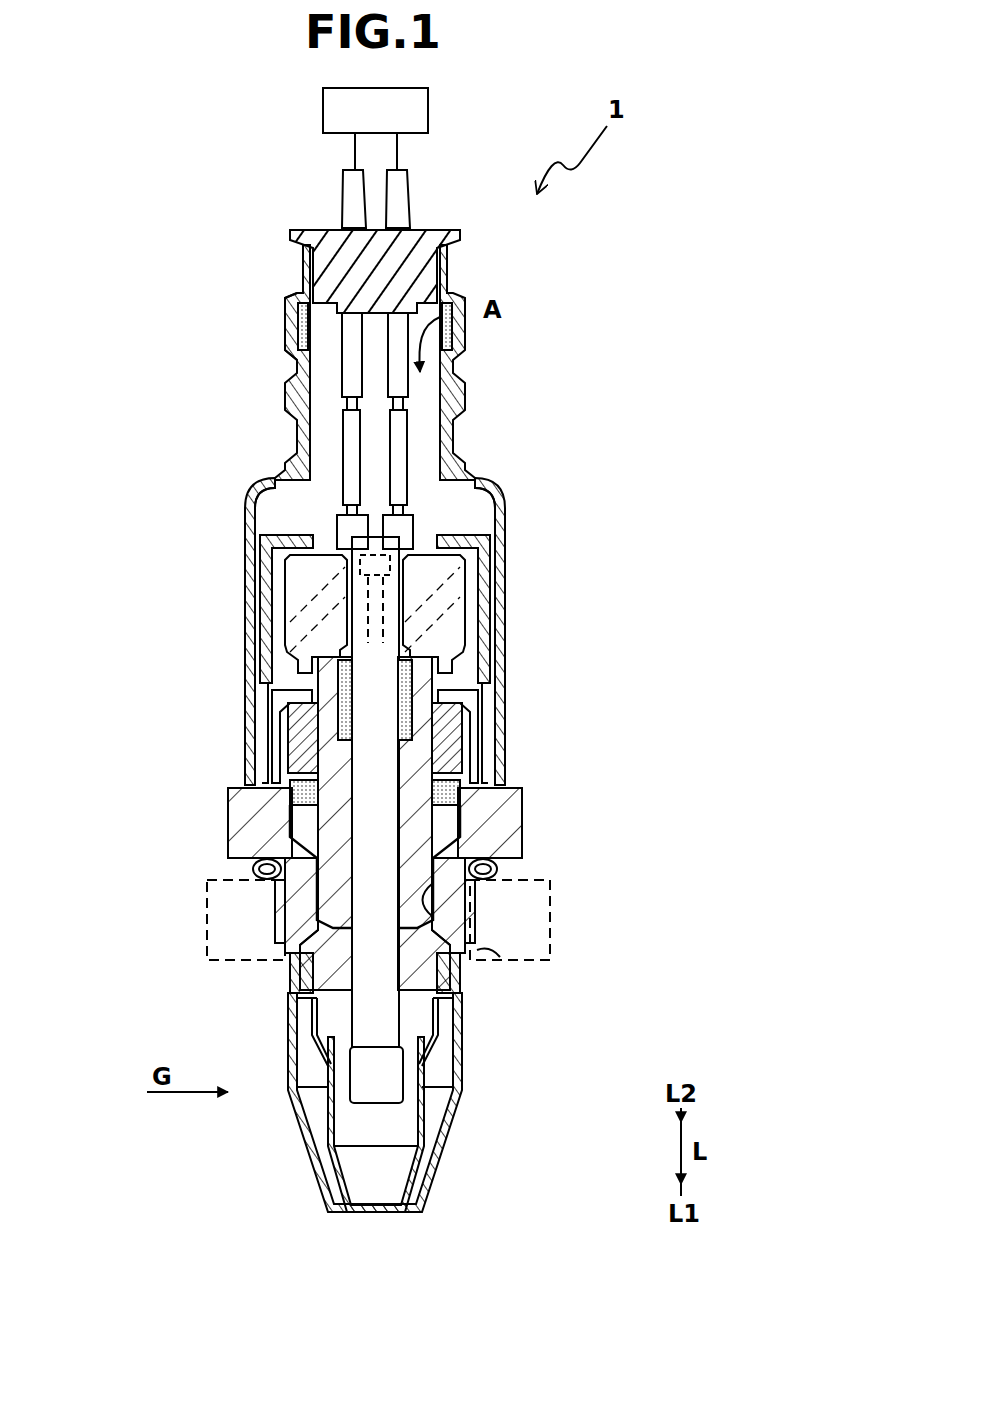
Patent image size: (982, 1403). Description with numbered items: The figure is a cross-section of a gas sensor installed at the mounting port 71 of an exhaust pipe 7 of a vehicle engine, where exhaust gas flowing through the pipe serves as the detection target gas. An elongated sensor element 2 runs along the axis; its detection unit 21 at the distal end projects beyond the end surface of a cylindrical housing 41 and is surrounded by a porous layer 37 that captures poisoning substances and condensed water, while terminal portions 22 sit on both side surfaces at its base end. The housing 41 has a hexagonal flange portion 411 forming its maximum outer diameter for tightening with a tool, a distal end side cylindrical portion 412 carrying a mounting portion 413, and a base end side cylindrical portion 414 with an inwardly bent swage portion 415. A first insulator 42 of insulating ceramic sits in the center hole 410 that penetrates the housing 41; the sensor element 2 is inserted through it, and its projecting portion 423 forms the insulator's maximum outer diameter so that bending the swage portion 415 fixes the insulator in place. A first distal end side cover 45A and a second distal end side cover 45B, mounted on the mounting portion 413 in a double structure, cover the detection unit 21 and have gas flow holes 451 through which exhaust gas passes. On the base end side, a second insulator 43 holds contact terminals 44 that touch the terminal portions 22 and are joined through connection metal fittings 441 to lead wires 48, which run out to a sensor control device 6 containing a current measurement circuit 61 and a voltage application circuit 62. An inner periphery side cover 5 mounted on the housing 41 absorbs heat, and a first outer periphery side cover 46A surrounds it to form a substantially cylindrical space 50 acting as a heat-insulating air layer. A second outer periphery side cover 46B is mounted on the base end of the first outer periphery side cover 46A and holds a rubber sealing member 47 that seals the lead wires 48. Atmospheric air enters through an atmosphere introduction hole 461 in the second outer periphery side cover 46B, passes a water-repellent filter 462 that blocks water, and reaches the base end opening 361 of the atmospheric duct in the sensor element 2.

The sensor element 2 is at (373, 827).
The inner periphery side cover 5 is at (495, 702).
The sensor control device 6 is at (434, 106).
The exhaust pipe 7 is at (560, 948).
The detection unit 21 is at (405, 1095).
The terminal portions 22 is at (352, 565).
The porous layer 37 is at (380, 1067).
The housing 41 is at (530, 829).
The first insulator 42 is at (300, 800).
The second insulator 43 is at (313, 615).
The contact terminals 44 is at (513, 582).
The first distal end side cover 45A is at (420, 1157).
The second distal end side cover 45B is at (307, 1140).
The first outer periphery side cover 46A is at (508, 648).
The second outer periphery side cover 46B is at (457, 408).
The sealing member 47 is at (440, 270).
The lead wires 48 is at (355, 352).
The substantially cylindrical space 50 is at (262, 643).
The current measurement circuit 61 is at (340, 120).
The voltage application circuit 62 is at (398, 180).
The mounting port 71 is at (500, 957).
The base end opening 361 is at (386, 522).
The center hole 410 is at (425, 921).
The flange portion 411 is at (250, 820).
The distal end side cylindrical portion 412 is at (285, 920).
The mounting portion 413 is at (310, 968).
The base end side cylindrical portion 414 is at (288, 757).
The swage portion 415 is at (280, 700).
The projecting portion 423 is at (312, 833).
The connection metal fittings 441 is at (355, 443).
The gas flow holes 451 is at (308, 1040).
The atmosphere introduction hole 461 is at (287, 320).
The water-repellent filter 462 is at (303, 337).